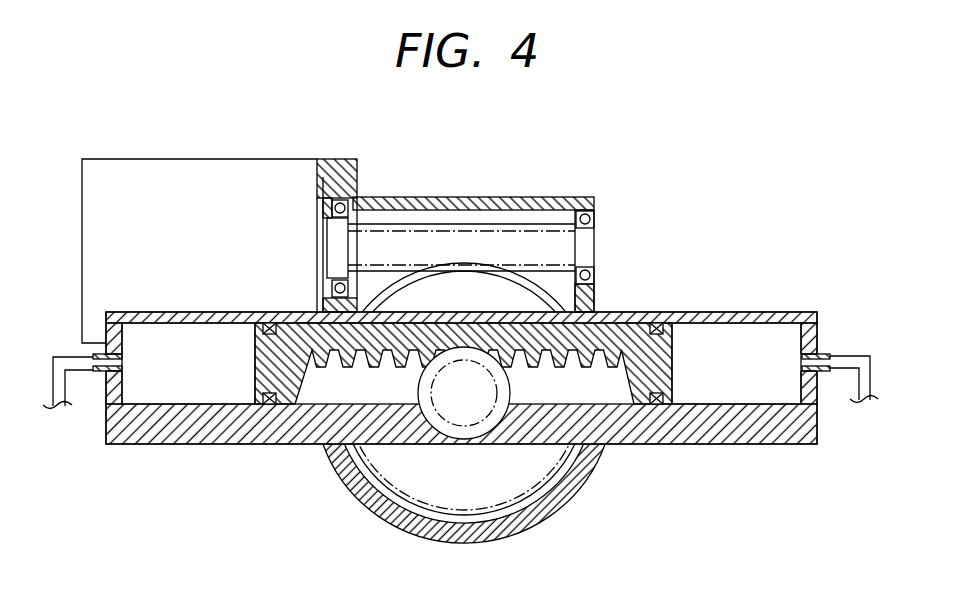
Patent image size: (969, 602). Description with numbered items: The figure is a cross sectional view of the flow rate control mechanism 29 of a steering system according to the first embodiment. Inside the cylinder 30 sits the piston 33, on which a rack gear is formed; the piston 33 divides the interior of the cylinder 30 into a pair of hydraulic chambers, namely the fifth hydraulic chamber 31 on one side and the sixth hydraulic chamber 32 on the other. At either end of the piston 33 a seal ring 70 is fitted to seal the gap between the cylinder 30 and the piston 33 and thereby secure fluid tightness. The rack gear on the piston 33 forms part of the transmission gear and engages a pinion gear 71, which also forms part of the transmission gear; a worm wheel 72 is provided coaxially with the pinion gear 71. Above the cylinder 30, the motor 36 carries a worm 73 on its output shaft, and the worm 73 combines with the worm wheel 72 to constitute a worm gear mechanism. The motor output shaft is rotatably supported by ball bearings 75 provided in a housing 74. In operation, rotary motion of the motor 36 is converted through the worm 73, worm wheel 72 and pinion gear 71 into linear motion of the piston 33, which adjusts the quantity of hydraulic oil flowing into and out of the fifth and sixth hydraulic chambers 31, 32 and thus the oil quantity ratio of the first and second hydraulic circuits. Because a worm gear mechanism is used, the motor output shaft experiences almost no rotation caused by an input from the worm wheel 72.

The flow rate control mechanism 29 is at (218, 131).
The cylinder 30 is at (773, 311).
The fifth hydraulic chamber 31 is at (153, 383).
The sixth hydraulic chamber 32 is at (757, 393).
The piston 33 is at (355, 357).
The motor 36 is at (279, 173).
The seal ring 70 is at (656, 321).
The pinion gear 71 is at (505, 414).
The worm wheel 72 is at (594, 300).
The worm 73 is at (517, 232).
The housing 74 is at (397, 202).
The ball bearings 75 is at (595, 216).